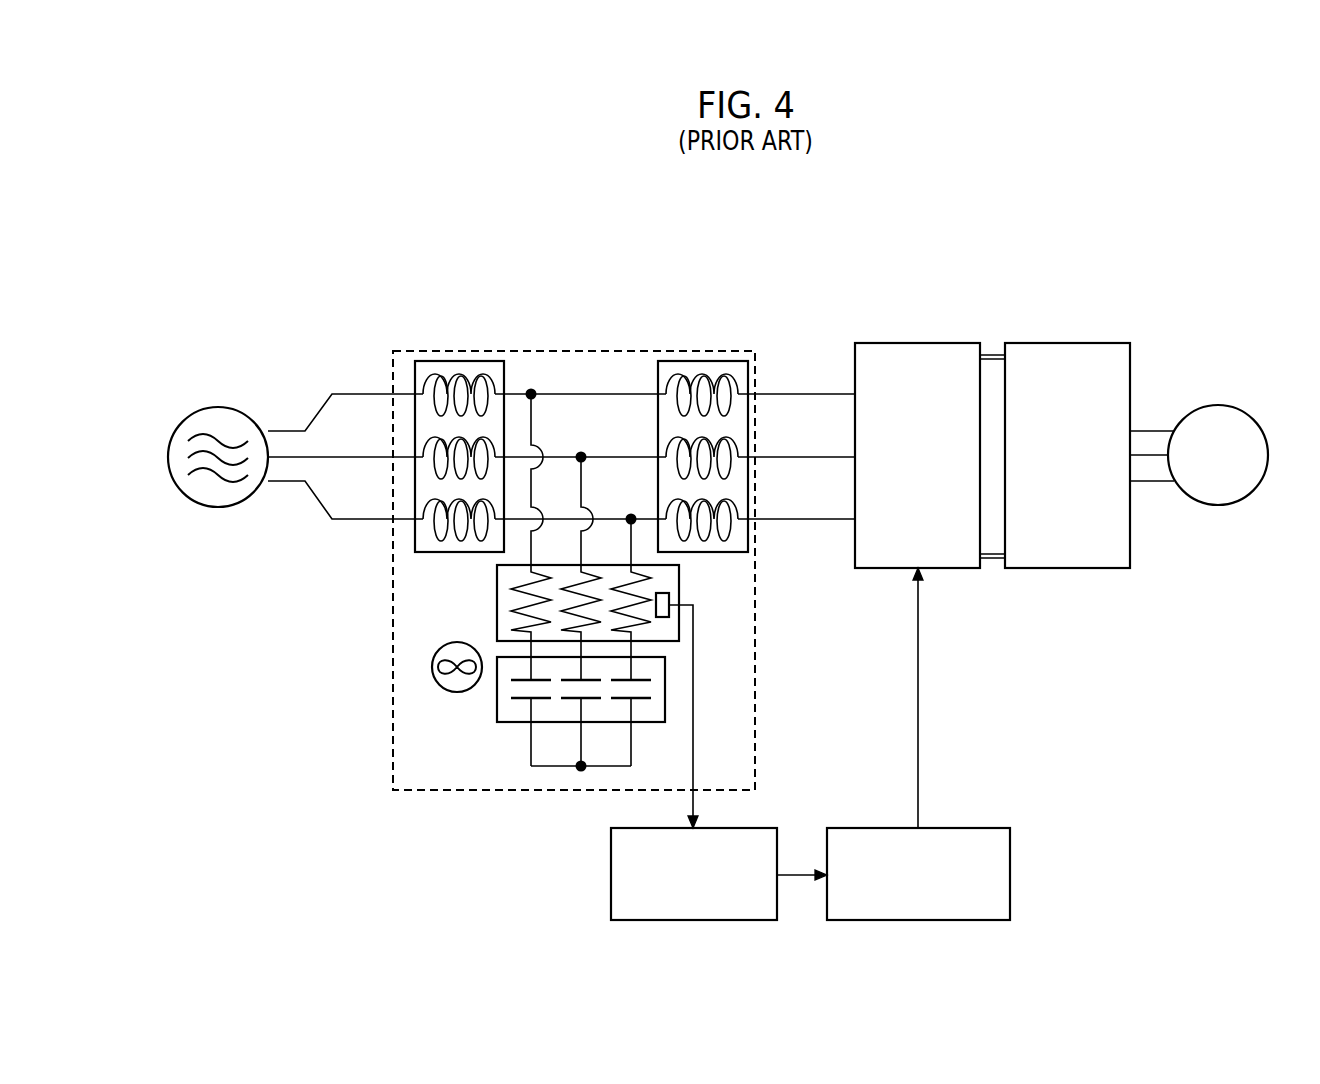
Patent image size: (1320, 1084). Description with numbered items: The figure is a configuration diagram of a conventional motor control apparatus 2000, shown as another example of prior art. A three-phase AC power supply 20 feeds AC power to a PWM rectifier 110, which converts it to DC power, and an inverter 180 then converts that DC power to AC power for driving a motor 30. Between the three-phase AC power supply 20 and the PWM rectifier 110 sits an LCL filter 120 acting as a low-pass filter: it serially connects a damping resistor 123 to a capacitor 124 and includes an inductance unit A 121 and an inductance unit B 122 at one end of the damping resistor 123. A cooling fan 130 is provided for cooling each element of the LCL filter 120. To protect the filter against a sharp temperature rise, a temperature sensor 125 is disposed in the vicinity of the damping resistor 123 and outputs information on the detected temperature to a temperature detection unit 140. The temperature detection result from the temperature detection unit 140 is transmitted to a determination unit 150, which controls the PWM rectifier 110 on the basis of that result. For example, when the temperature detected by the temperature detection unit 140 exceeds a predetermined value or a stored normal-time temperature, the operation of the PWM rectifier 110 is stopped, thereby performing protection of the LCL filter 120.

The motor control apparatus 2000 is at (638, 258).
The three-phase AC power supply 20 is at (187, 500).
The motor 30 is at (1235, 410).
The PWM rectifier 110 is at (915, 343).
The LCL filter 120 is at (665, 351).
The inductance unit A 121 is at (460, 361).
The inductance unit B 122 is at (747, 357).
The damping resistor 123 is at (497, 590).
The capacitor 124 is at (648, 722).
The temperature sensor 125 is at (670, 594).
The cooling fan 130 is at (435, 652).
The temperature detection unit 140 is at (611, 860).
The determination unit 150 is at (1010, 878).
The inverter 180 is at (1058, 343).